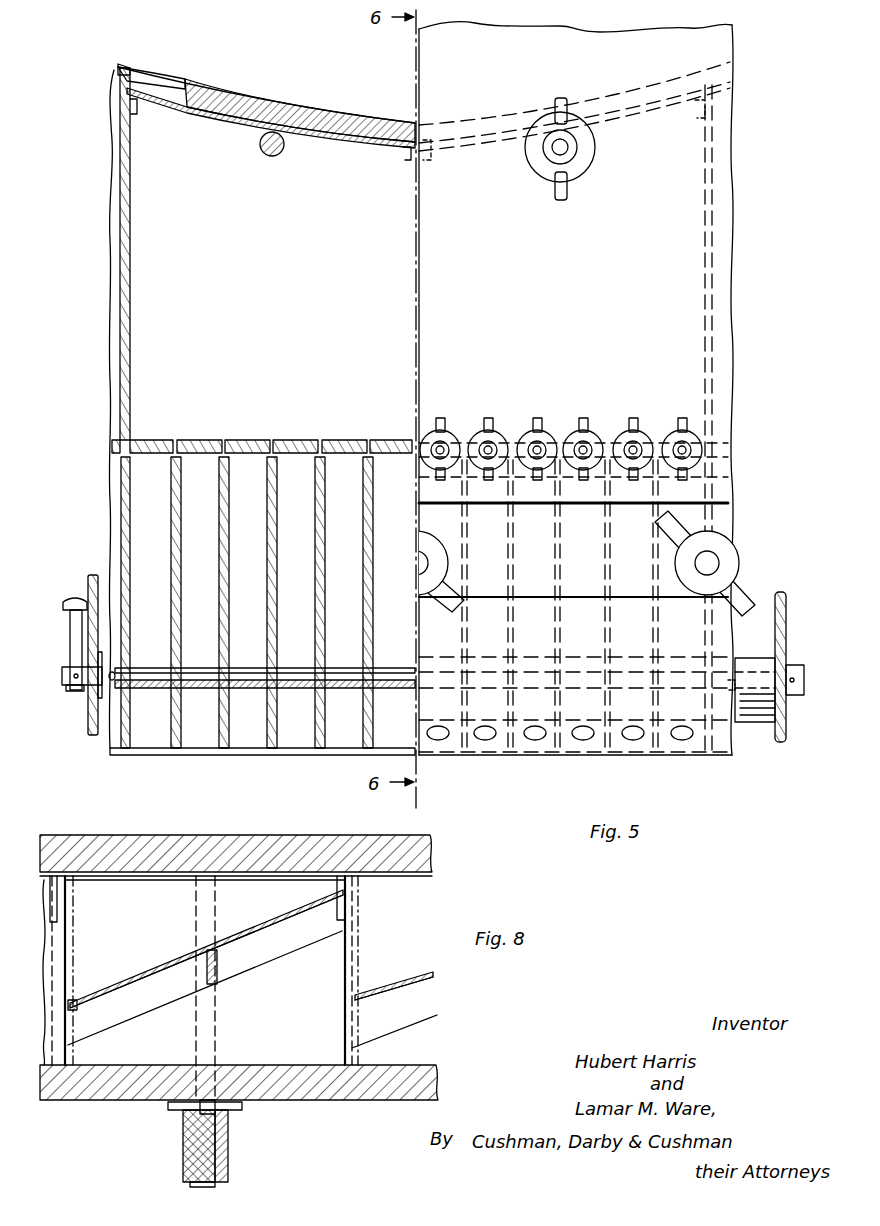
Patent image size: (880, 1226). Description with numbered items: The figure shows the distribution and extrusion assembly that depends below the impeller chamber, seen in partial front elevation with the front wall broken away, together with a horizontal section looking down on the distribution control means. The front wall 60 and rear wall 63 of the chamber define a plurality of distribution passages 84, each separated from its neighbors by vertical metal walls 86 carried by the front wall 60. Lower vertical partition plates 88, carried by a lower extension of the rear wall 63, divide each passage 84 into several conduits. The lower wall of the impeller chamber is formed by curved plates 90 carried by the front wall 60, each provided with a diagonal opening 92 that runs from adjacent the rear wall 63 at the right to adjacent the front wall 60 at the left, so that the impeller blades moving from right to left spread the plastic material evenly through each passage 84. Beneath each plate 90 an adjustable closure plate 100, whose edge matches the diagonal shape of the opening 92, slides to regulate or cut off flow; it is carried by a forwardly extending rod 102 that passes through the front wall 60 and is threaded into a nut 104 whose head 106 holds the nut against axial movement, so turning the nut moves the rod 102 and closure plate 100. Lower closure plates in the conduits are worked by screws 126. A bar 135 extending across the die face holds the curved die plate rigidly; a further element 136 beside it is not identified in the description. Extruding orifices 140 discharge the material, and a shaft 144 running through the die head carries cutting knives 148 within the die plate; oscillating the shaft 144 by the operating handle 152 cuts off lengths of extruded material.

In FIG. 8, the front wall 60 is at (327, 1095).
In FIG. 8, the rear wall 63 is at (290, 846).
In FIG. 5, the distribution passage 84 is at (130, 218).
In FIG. 5, the vertical metal wall 86 is at (127, 353).
In FIG. 8, the vertical metal wall 86 is at (68, 913).
In FIG. 5, the lower vertical partition plate 88 is at (122, 518).
In FIG. 5, the curved plate 90 is at (258, 118).
In FIG. 8, the curved plate 90 is at (131, 885).
In FIG. 5, the diagonal opening 92 is at (188, 86).
In FIG. 8, the diagonal opening 92 is at (250, 940).
In FIG. 5, the adjustable closure plate 100 is at (236, 123).
In FIG. 8, the adjustable closure plate 100 is at (154, 977).
In FIG. 5, the rod 102 is at (281, 154).
In FIG. 8, the rod 102 is at (218, 968).
In FIG. 5, the nut 104 is at (577, 152).
In FIG. 8, the nut 104 is at (229, 1152).
In FIG. 5, the head 106 is at (574, 122).
In FIG. 8, the head 106 is at (186, 1105).
In FIG. 5, the screw 126 is at (447, 436).
In FIG. 5, the bar 135 is at (697, 522).
In FIG. 5, the knob 136 is at (738, 592).
In FIG. 5, the extruding orifice 140 is at (582, 740).
In FIG. 5, the shaft 144 is at (62, 688).
In FIG. 5, the cutting knife 148 is at (760, 744).
In FIG. 5, the operating handle 152 is at (70, 600).